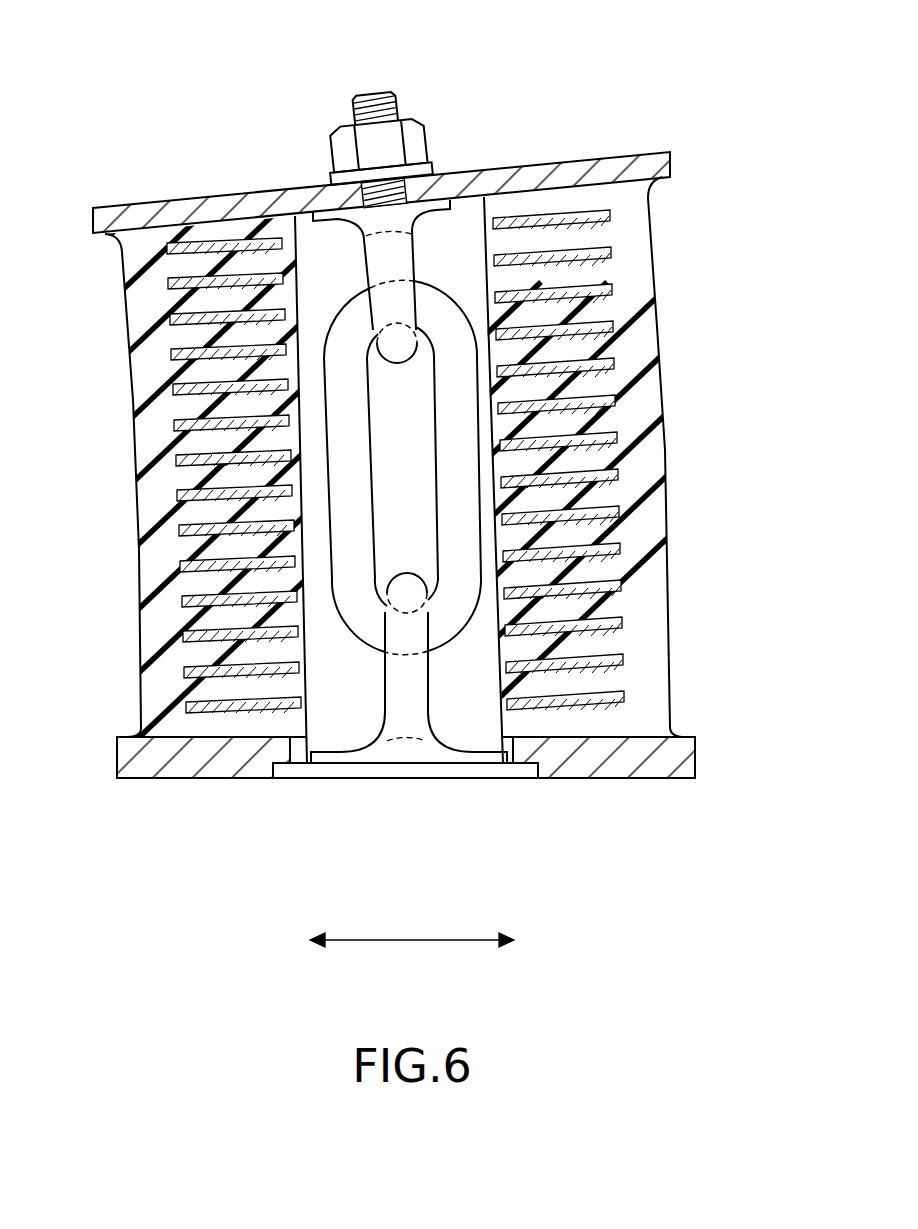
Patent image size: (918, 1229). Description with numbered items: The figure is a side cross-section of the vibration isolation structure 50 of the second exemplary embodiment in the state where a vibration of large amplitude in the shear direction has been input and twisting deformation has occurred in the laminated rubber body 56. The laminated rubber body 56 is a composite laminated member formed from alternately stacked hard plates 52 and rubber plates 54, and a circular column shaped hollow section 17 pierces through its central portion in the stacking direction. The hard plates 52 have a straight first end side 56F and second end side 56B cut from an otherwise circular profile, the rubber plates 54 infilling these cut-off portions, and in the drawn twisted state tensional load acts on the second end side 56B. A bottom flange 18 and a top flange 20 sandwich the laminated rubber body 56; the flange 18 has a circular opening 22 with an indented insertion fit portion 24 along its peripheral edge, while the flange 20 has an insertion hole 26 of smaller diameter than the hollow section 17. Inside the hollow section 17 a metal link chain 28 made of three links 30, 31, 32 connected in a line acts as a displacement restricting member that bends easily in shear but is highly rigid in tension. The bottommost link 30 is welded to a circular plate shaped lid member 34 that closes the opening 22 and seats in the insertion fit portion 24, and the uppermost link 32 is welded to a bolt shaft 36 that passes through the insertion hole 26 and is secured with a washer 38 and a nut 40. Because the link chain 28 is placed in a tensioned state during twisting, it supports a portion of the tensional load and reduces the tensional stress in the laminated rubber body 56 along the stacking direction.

The hollow section 17 is at (283, 247).
The flange 18 is at (688, 782).
The flange 20 is at (123, 208).
The opening 22 is at (491, 767).
The insertion fit portion 24 is at (290, 767).
The insertion hole 26 is at (405, 120).
The link chain 28 is at (443, 290).
The link 30 is at (384, 700).
The link 31 is at (463, 637).
The link 32 is at (402, 365).
The lid member 34 is at (400, 782).
The bolt shaft 36 is at (368, 93).
The washer 38 is at (410, 207).
The nut 40 is at (338, 126).
The vibration isolation structure 50 is at (707, 80).
The hard plates 52 is at (606, 268).
The rubber plates 54 is at (135, 305).
The laminated rubber body 56 is at (676, 456).
The second end side 56B is at (620, 362).
The first end side 56F is at (174, 362).